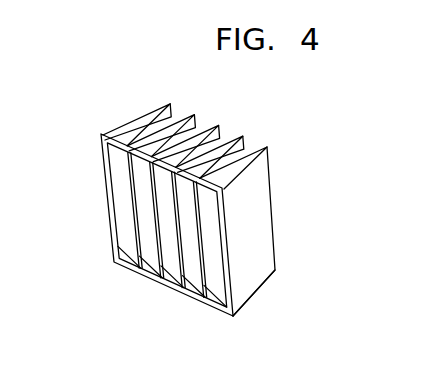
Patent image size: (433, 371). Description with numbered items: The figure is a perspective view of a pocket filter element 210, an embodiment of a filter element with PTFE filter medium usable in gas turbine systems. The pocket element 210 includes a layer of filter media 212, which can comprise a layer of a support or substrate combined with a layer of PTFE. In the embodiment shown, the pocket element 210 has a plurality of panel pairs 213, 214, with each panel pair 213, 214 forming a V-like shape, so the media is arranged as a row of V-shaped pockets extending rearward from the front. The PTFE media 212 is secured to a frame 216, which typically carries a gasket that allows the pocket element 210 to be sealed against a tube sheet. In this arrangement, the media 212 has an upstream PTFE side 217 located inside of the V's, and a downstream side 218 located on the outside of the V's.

The pocket filter element 210 is at (120, 117).
The filter media 212 is at (273, 220).
The panel pair 213 is at (192, 122).
The panel pair 214 is at (186, 116).
The frame 216 is at (160, 285).
The upstream PTFE side 217 is at (218, 288).
The downstream side 218 is at (255, 272).